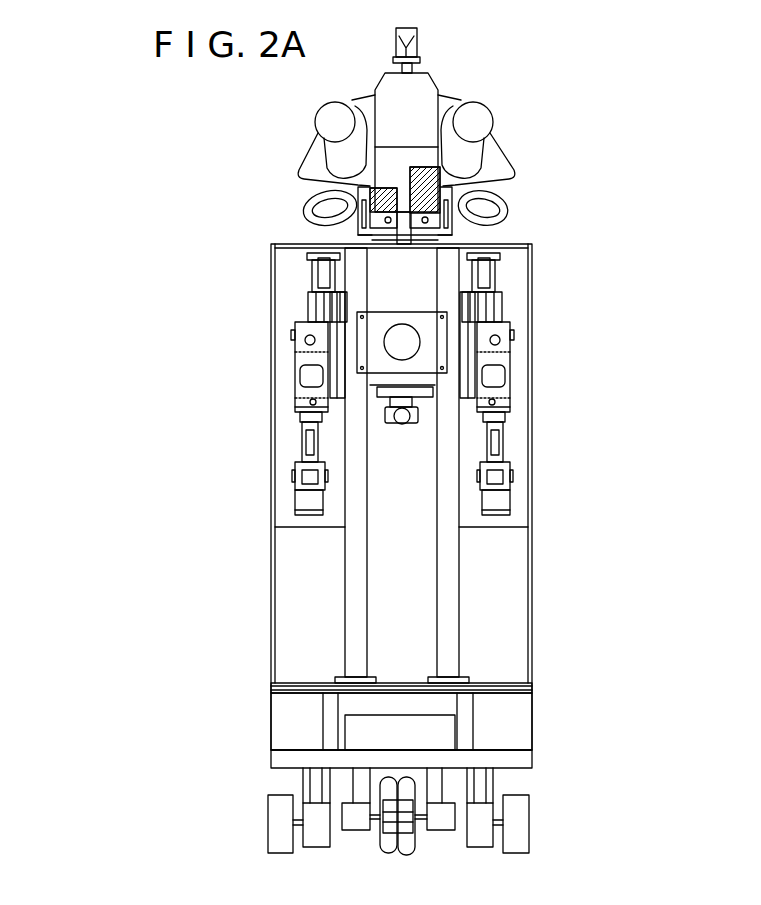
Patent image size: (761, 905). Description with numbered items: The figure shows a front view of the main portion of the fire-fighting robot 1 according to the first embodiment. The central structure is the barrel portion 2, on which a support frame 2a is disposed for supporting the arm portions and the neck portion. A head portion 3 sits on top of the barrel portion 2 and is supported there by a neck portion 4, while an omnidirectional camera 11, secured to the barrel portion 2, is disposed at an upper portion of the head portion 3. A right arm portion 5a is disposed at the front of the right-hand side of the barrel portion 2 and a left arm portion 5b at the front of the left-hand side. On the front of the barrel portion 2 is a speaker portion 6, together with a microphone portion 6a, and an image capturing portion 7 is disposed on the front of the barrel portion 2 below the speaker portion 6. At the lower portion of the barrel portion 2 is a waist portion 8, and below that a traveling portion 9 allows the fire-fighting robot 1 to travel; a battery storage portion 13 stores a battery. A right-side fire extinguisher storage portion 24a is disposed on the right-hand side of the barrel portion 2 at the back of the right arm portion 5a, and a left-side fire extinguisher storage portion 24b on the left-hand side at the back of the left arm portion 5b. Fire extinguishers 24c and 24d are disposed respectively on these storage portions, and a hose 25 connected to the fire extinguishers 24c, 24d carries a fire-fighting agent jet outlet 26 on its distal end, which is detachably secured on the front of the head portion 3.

The fire-fighting robot 1 is at (229, 166).
The barrel portion 2 is at (552, 292).
The support frame 2a is at (450, 277).
The head portion 3 is at (532, 136).
The neck portion 4 is at (527, 207).
The right arm portion 5a is at (278, 396).
The left arm portion 5b is at (532, 395).
The speaker portion 6 is at (402, 342).
The microphone portion 6a is at (430, 395).
The image capturing portion 7 is at (413, 420).
The waist portion 8 is at (550, 704).
The traveling portion 9 is at (551, 798).
The omnidirectional camera 11 is at (407, 40).
The battery storage portion 13 is at (370, 733).
The right-side fire extinguisher storage portion 24a is at (288, 268).
The left-side fire extinguisher storage portion 24b is at (518, 311).
The fire extinguisher 24c is at (310, 303).
The fire extinguisher 24d is at (500, 302).
The hose 25 is at (372, 206).
The fire-fighting agent jet outlet 26 is at (347, 200).